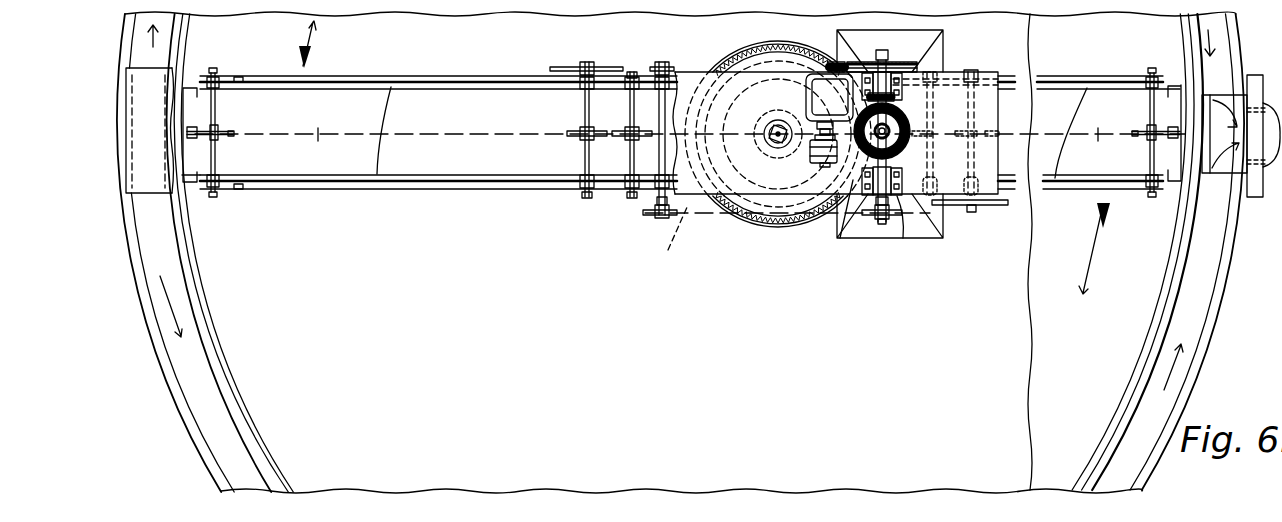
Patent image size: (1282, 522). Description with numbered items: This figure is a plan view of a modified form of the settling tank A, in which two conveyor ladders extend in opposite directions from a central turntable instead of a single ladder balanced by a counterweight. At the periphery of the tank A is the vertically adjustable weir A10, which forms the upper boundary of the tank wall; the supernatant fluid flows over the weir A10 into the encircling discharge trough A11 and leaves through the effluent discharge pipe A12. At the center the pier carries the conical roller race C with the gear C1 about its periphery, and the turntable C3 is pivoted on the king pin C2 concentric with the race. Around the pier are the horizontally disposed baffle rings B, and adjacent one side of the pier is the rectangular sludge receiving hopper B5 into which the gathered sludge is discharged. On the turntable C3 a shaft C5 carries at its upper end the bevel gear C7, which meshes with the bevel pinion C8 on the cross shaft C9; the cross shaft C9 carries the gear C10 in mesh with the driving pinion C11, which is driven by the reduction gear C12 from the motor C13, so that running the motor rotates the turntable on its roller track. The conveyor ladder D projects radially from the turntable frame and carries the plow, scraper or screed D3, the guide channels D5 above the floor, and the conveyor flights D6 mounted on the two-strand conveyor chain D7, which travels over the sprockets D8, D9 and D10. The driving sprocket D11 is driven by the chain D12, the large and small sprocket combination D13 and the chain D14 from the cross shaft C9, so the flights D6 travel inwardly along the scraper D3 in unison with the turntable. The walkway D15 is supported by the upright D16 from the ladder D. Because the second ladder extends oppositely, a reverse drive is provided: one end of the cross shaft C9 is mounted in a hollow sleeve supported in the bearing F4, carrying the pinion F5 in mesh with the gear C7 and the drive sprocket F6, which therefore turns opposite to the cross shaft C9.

The settling tank A is at (1047, 478).
The weir A10 is at (188, 34).
The discharge trough A11 is at (1200, 318).
The effluent discharge pipe A12 is at (1258, 97).
The baffle rings B is at (750, 224).
The sludge receiving hopper B5 is at (928, 205).
The conical roller race C is at (738, 62).
The gear C1 is at (783, 44).
The king pin C2 is at (774, 133).
The turntable C3 is at (817, 188).
The shaft C5 is at (905, 142).
The bevel gear C7 is at (889, 130).
The bevel pinion C8 is at (884, 118).
The cross shaft C9 is at (889, 55).
The gear C10 is at (912, 64).
The driving pinion C11 is at (838, 62).
The reduction gear C12 is at (817, 102).
The motor C13 is at (809, 155).
The conveyor ladder D is at (437, 77).
The plow, scraper or screed D3 is at (190, 188).
The guide channels D5 is at (734, 132).
The conveyor flights D6 is at (216, 150).
The two-strand conveyor chain D7 is at (690, 137).
The sprocket D8 is at (630, 130).
The sprocket D9 is at (230, 130).
The sprocket D10 is at (576, 130).
The driving sprocket D11 is at (557, 66).
The chain D12 is at (632, 70).
The large and small sprocket combination D13 is at (668, 66).
The chain D14 is at (711, 214).
The walkway D15 is at (150, 192).
The upright D16 is at (236, 77).
The bearing F4 is at (861, 192).
The pinion F5 is at (890, 170).
The drive sprocket F6 is at (898, 196).